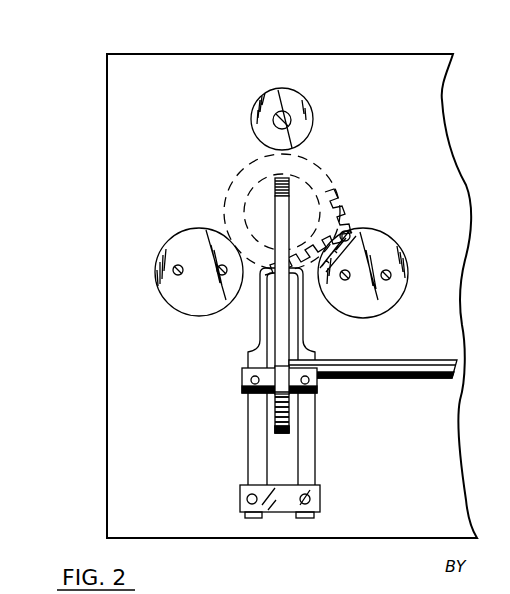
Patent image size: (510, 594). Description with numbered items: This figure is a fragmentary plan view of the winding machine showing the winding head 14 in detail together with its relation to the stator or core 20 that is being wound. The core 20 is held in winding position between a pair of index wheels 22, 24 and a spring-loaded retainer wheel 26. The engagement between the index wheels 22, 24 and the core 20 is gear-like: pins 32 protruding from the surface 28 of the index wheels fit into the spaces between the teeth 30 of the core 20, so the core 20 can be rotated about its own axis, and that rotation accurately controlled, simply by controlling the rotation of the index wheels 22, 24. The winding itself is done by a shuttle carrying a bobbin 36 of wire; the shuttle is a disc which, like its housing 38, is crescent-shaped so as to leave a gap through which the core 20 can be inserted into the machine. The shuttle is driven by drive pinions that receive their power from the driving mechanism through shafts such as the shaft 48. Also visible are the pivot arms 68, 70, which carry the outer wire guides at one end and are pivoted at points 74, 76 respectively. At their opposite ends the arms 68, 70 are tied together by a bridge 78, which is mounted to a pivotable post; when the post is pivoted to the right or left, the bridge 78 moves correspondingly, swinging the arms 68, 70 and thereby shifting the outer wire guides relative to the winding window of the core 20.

The winding head 14 is at (82, 381).
The core 20 is at (323, 180).
The index wheel 22 is at (183, 288).
The index wheel 24 is at (386, 290).
The spring-loaded retainer wheel 26 is at (295, 108).
The surface 28 is at (340, 246).
The teeth 30 is at (340, 210).
The pins 32 is at (348, 233).
The bobbin 36 is at (296, 202).
The housing 38 is at (290, 430).
The shaft 48 is at (395, 364).
The pivot arm 68 is at (256, 349).
The pivot arm 70 is at (306, 348).
The pivot point 74 is at (245, 389).
The pivot point 76 is at (313, 387).
The bridge 78 is at (283, 498).